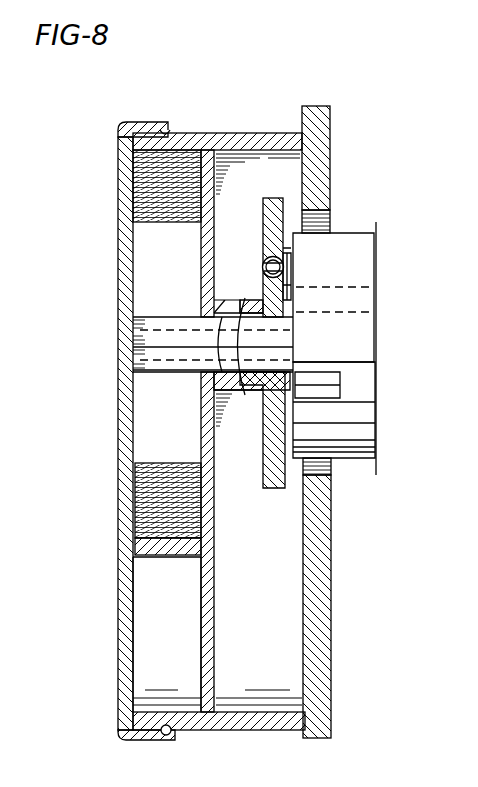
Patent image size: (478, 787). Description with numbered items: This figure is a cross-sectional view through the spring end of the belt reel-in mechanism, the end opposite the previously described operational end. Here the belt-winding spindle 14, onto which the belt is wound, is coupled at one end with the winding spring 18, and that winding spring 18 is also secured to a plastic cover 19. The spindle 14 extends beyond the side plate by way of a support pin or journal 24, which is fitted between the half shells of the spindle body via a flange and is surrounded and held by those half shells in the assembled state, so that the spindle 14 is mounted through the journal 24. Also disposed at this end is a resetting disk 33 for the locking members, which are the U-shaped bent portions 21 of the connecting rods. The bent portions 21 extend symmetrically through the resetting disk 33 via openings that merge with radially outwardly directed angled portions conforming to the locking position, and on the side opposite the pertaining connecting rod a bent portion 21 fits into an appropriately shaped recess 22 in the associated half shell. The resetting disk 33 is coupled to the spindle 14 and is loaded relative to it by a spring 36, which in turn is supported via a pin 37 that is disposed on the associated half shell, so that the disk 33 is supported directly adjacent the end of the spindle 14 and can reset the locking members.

The belt-winding spindle 14 is at (368, 275).
The winding spring 18 is at (148, 493).
The plastic cover 19 is at (210, 140).
The bent portion 21 is at (340, 400).
The recess 22 is at (345, 372).
The support pin or journal 24 is at (135, 343).
The resetting disk 33 is at (277, 200).
The spring 36 is at (262, 262).
The pin 37 is at (292, 256).